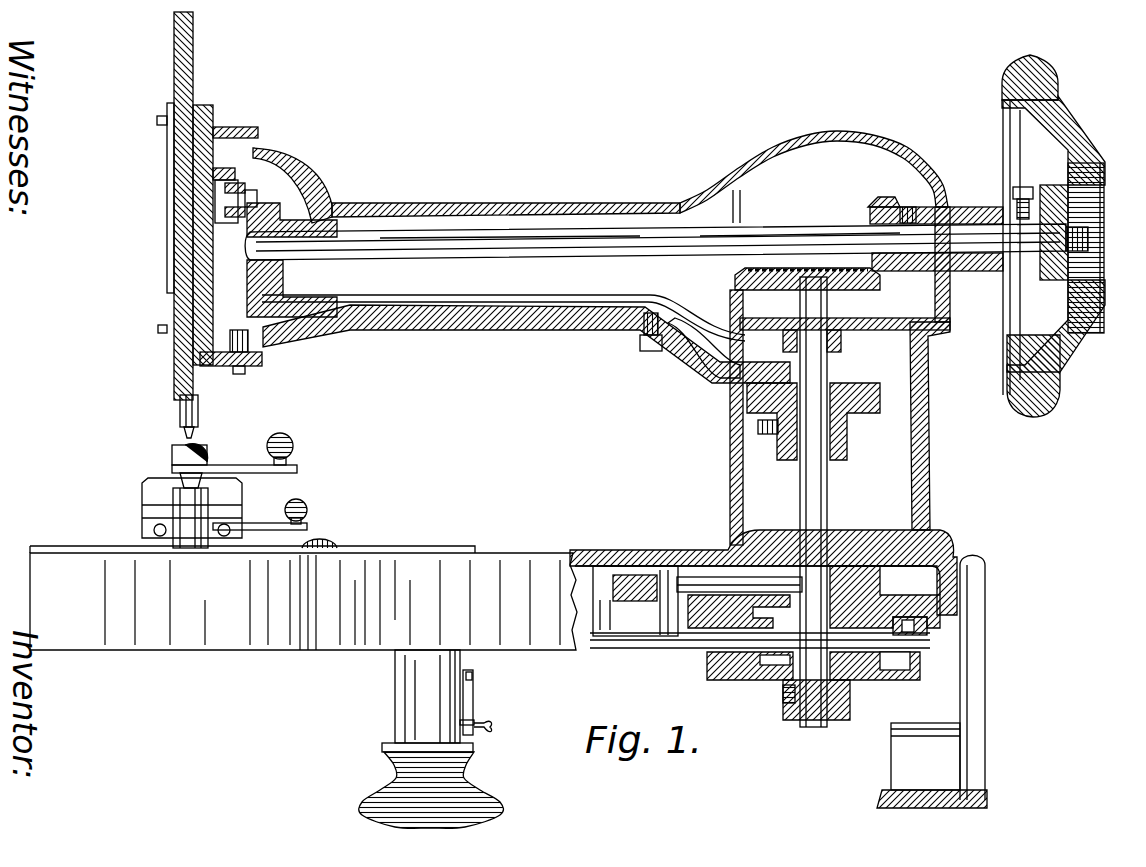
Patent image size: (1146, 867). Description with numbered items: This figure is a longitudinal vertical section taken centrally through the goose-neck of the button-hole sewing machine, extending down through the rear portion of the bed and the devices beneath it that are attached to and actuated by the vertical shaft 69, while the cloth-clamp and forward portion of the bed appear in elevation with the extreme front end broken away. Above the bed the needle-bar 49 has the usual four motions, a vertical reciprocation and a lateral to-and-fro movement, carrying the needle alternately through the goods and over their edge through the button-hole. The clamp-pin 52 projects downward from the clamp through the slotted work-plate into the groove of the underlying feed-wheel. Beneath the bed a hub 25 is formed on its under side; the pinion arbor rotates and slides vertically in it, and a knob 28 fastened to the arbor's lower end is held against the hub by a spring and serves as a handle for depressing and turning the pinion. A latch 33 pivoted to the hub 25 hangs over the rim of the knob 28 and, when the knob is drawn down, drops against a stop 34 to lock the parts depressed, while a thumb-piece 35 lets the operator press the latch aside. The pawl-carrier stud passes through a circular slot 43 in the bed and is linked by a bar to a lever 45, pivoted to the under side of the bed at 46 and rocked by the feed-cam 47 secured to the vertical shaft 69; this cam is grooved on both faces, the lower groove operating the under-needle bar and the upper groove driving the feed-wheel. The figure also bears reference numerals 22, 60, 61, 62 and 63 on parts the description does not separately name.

The table 22 is at (173, 638).
The hub 25 is at (413, 690).
The knob 28 is at (382, 792).
The latch 33 is at (467, 703).
The stop 34 is at (472, 728).
The thumb-piece 35 is at (490, 725).
The circular slot 43 is at (745, 588).
The lever 45 is at (660, 553).
The pivot 46 is at (649, 648).
The feed-cam 47 is at (870, 597).
The needle-bar 49 is at (180, 413).
The clamp-pin 52 is at (190, 553).
The belt pulley 60 is at (1103, 337).
The balance wheel 61 is at (1050, 118).
The bracket 62 is at (972, 702).
The standard 63 is at (924, 462).
The vertical shaft 69 is at (828, 503).